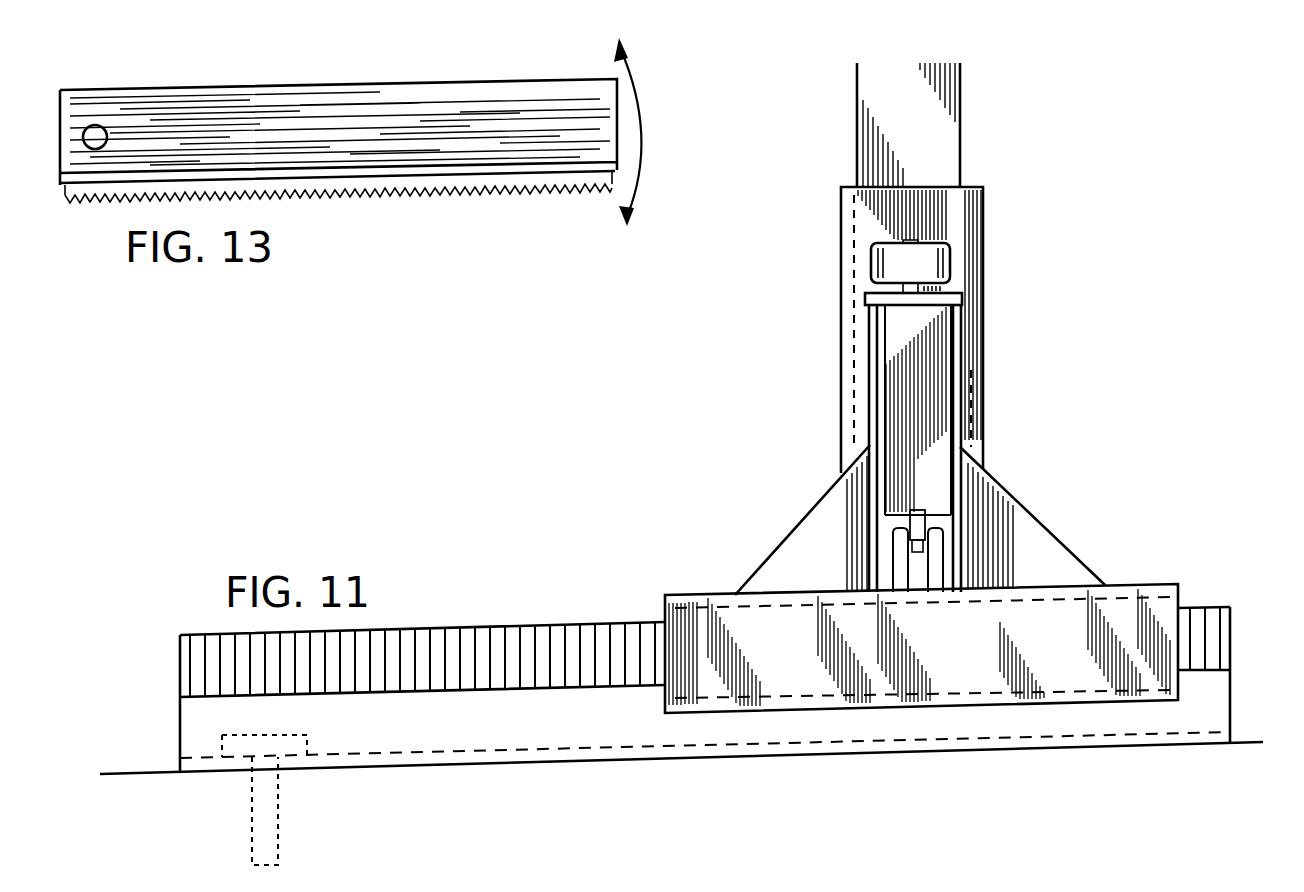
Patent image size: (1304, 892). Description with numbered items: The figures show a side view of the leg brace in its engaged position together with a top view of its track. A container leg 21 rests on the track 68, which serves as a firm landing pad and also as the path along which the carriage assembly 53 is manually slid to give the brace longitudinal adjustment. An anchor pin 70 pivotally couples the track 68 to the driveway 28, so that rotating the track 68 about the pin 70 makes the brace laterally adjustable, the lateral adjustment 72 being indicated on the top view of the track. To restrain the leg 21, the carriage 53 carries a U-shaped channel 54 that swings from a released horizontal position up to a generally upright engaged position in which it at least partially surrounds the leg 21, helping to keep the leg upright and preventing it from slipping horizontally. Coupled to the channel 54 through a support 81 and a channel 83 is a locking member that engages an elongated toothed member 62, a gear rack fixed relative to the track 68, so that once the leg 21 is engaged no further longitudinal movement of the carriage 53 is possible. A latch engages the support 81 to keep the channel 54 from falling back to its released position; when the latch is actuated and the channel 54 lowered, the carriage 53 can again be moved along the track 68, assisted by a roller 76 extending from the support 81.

In FIG. 11, the container leg 21 is at (962, 157).
In FIG. 11, the driveway 28 is at (160, 772).
In FIG. 11, the carriage assembly 53 is at (757, 529).
In FIG. 11, the U-shaped channel 54 is at (985, 310).
In FIG. 13, the elongated toothed member 62 is at (365, 197).
In FIG. 11, the elongated toothed member 62 is at (503, 622).
In FIG. 13, the track 68 is at (340, 86).
In FIG. 11, the track 68 is at (180, 717).
In FIG. 13, the anchor pin 70 is at (94, 124).
In FIG. 11, the anchor pin 70 is at (265, 735).
In FIG. 13, the lateral adjustment 72 is at (643, 138).
In FIG. 11, the roller 76 is at (871, 268).
In FIG. 11, the support 81 is at (862, 383).
In FIG. 11, the channel 83 is at (1143, 583).